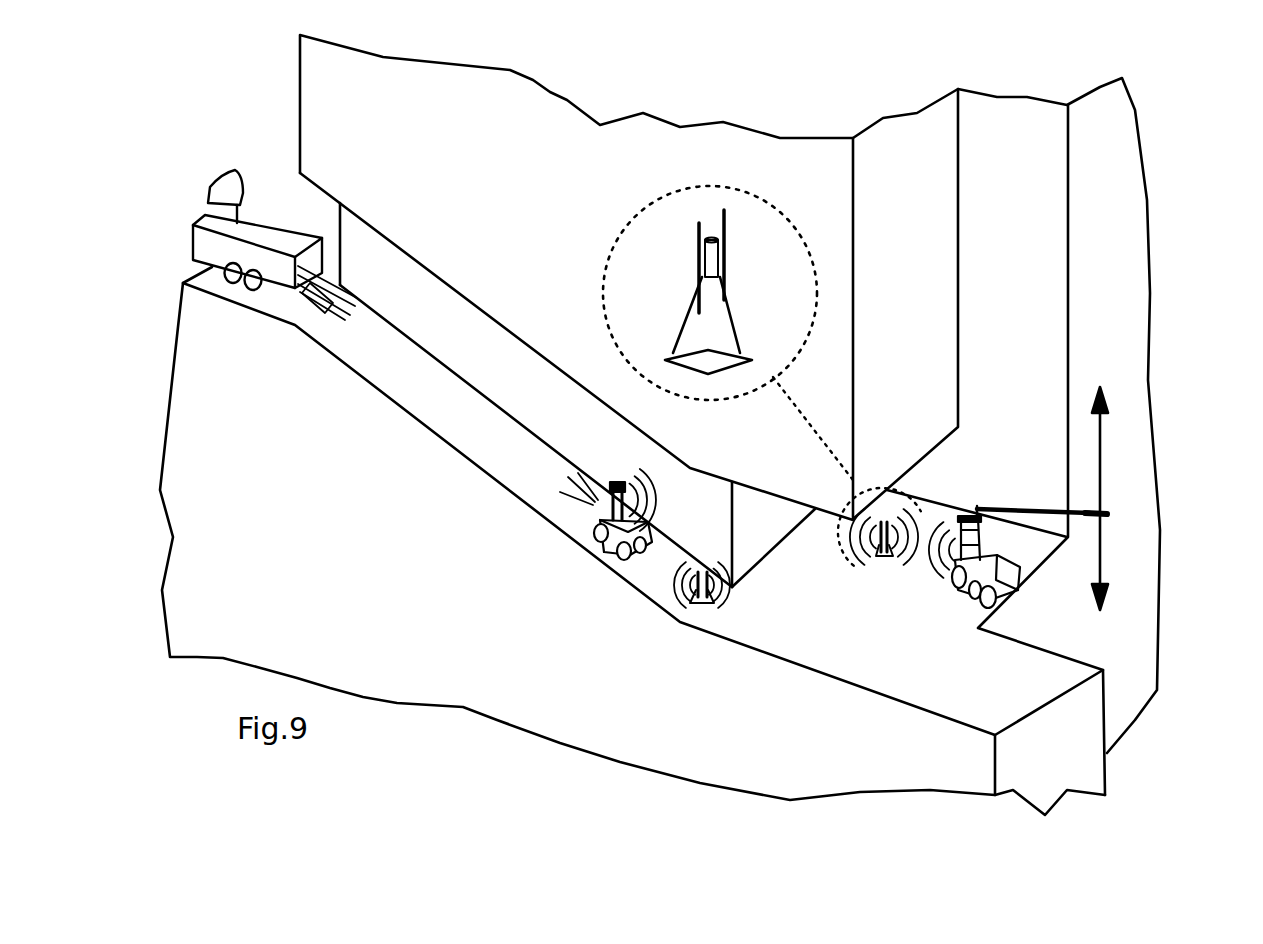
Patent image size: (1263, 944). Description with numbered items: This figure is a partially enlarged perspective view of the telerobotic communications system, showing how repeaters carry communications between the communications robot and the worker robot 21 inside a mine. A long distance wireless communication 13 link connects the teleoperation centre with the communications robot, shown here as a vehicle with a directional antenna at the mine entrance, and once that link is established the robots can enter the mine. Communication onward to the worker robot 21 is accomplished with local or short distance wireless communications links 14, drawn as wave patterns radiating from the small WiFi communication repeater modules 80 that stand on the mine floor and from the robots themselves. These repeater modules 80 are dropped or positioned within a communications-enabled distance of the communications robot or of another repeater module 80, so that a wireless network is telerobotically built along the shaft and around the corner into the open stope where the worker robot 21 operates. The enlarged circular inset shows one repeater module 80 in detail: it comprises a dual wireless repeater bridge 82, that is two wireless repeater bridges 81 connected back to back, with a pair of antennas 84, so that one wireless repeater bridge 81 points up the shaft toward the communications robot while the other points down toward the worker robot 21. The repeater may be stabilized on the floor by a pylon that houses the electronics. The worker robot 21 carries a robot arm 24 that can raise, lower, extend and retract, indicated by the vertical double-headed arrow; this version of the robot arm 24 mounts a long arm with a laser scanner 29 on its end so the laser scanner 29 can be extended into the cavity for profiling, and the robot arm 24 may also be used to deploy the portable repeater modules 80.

The long distance wireless communication 13 is at (560, 492).
The local or short distance wireless communications links 14 is at (613, 568).
The worker robot 21 is at (1032, 580).
The robot arm 24 is at (1033, 507).
The laser scanner 29 is at (1103, 513).
The WiFi communication repeater modules 80 is at (708, 325).
The wireless repeater bridge 81 is at (974, 213).
The dual wireless repeater bridge 82 is at (710, 257).
The antennas 84 is at (974, 213).